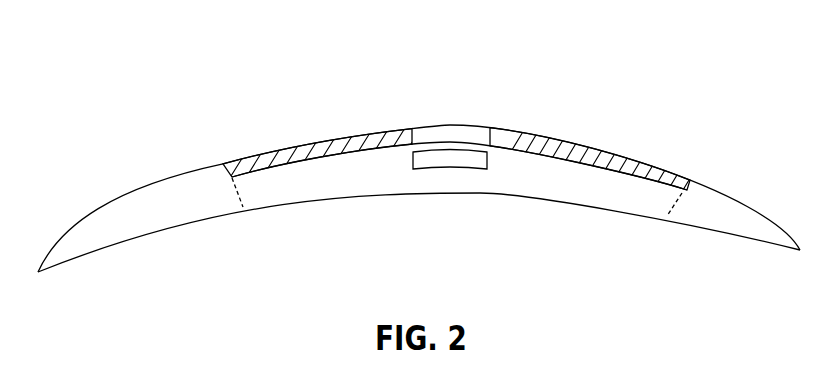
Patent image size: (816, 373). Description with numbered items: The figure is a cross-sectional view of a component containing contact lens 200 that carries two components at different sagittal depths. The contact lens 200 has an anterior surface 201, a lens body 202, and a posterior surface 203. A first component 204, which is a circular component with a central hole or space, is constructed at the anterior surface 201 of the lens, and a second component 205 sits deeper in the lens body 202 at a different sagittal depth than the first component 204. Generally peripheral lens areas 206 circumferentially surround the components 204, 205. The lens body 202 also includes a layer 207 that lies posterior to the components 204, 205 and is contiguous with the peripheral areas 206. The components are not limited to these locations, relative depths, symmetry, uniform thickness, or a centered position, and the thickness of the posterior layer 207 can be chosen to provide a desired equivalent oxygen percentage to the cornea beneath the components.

The component containing contact lens 200 is at (110, 38).
The anterior surface 201 is at (717, 190).
The lens body 202 is at (420, 227).
The posterior surface 203 is at (697, 225).
The first component 204 is at (387, 138).
The second component 205 is at (453, 160).
The peripheral lens areas 206 is at (193, 187).
The layer 207 is at (332, 170).